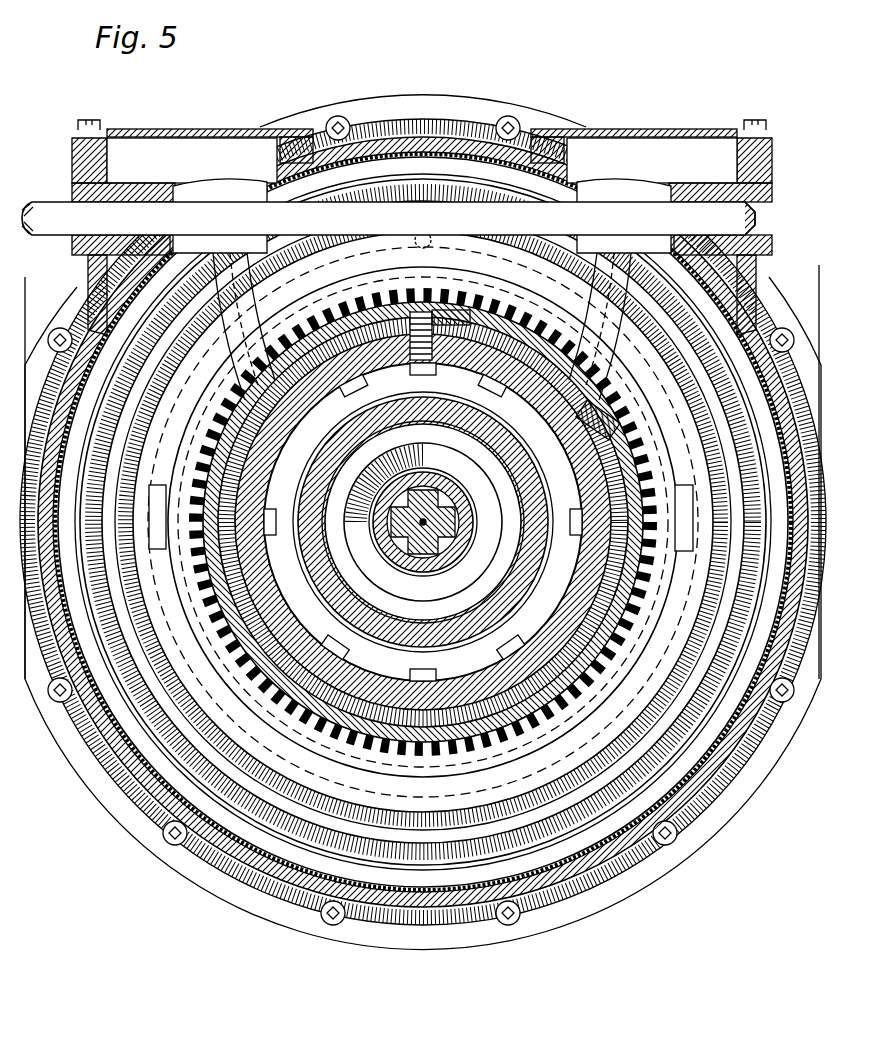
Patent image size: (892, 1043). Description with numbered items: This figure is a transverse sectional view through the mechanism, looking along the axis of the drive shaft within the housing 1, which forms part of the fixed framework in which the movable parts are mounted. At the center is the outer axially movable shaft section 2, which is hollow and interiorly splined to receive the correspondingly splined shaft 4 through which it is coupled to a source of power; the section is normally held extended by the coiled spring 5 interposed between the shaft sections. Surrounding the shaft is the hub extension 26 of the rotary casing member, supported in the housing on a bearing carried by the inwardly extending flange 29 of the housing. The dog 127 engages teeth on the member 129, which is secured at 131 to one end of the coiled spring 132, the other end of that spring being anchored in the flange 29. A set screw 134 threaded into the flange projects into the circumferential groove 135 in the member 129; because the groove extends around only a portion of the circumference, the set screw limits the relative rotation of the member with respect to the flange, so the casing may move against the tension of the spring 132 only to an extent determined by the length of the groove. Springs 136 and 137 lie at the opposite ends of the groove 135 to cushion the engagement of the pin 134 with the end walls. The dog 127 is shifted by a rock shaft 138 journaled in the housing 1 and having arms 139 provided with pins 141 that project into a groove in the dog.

The housing 1 is at (438, 122).
The outer axially movable shaft section 2 is at (385, 543).
The splined shaft 4 is at (445, 532).
The coiled spring 5 is at (505, 548).
The hub extension 26 is at (492, 608).
The inwardly extending flange 29 is at (480, 680).
The dog 127 is at (200, 588).
The member 129 is at (437, 750).
The securing point 131 is at (415, 249).
The coiled spring 132 is at (640, 760).
The set screw 134 is at (412, 352).
The circumferential groove 135 is at (300, 348).
The spring 136 is at (460, 310).
The spring 137 is at (585, 418).
The rock shaft 138 is at (353, 236).
The arms 139 is at (232, 280).
The pins 141 is at (172, 552).